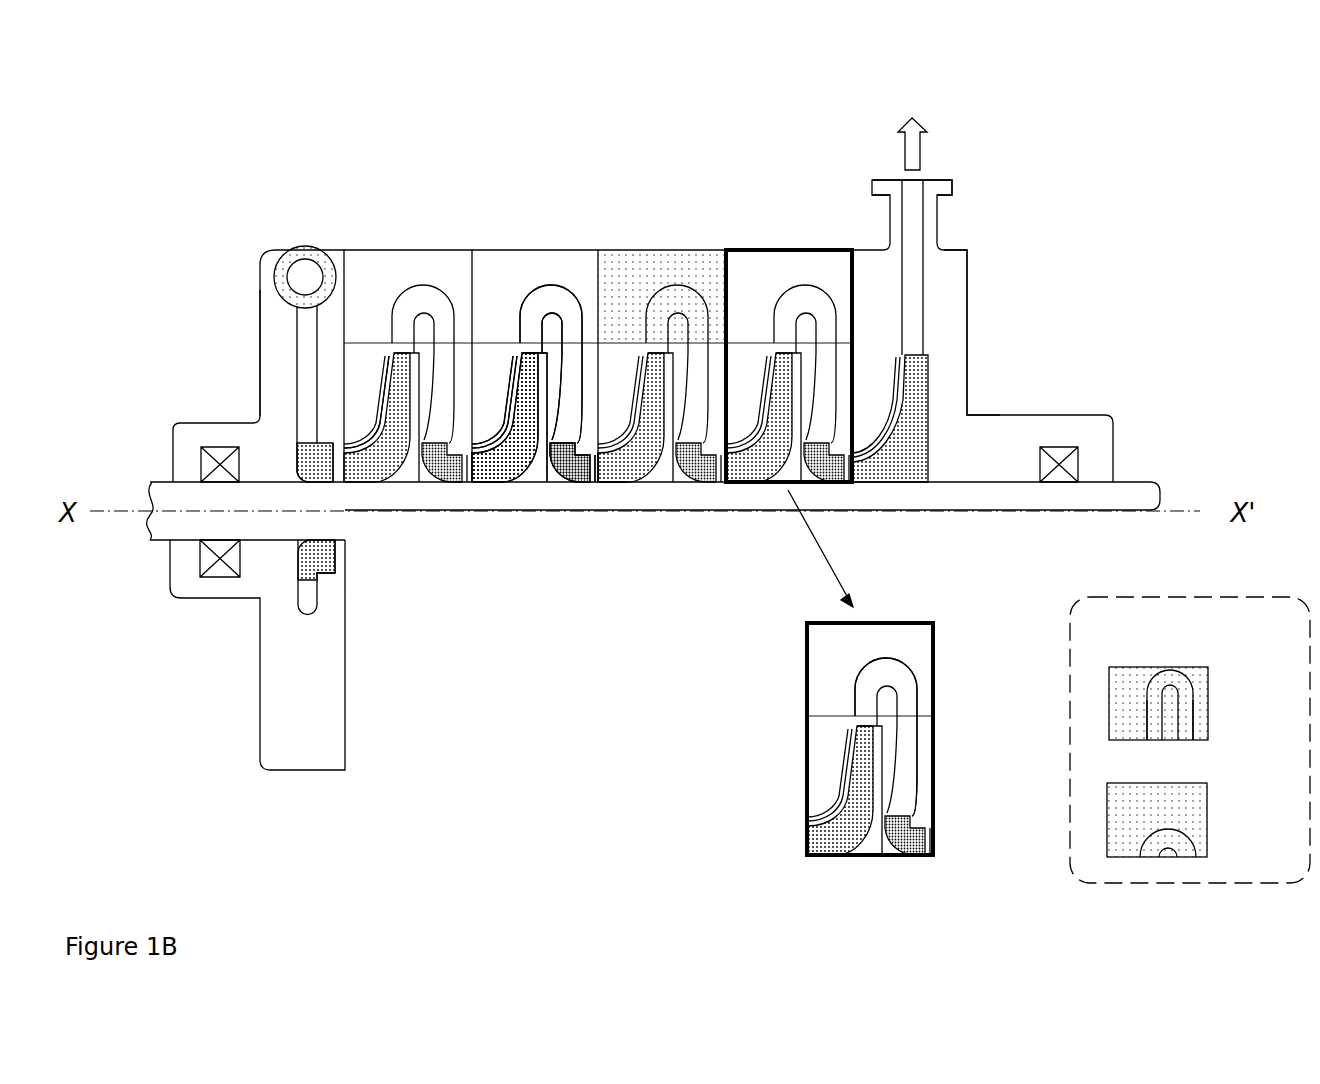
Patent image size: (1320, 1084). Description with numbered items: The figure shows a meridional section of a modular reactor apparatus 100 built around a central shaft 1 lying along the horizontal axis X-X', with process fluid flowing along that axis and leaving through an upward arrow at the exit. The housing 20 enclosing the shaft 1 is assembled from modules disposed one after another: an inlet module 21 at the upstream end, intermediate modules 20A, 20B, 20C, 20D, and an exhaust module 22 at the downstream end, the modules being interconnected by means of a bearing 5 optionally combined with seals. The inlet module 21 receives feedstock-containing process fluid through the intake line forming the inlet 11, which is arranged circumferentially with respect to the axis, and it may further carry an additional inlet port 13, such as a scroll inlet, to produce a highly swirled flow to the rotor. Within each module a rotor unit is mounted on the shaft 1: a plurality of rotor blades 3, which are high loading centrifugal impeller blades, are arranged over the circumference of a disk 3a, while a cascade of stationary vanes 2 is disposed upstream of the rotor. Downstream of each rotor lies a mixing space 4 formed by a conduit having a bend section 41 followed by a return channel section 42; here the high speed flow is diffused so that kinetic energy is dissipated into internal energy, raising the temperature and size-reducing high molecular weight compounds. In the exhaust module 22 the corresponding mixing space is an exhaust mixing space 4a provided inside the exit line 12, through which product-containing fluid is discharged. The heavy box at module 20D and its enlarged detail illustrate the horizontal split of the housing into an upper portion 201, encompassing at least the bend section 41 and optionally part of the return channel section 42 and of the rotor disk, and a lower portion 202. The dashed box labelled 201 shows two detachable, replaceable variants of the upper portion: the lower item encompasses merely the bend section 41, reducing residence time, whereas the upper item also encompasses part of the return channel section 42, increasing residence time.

The apparatus 100 is at (1265, 69).
The central shaft 1 is at (163, 525).
The stationary vanes 2 is at (580, 470).
The rotor blades 3 is at (500, 470).
The disk 3a is at (403, 465).
The mixing space 4 is at (578, 380).
The exhaust mixing space 4a is at (913, 320).
The bearing 5 is at (620, 470).
The inlet 11 is at (297, 283).
The exit 12 is at (942, 173).
The additional inlet port 13 is at (303, 603).
The housing 20 is at (258, 245).
The module 20A is at (376, 248).
The module 20B is at (495, 248).
The module 20C is at (665, 248).
The module 20D is at (785, 248).
The inlet module 21 is at (270, 352).
The exhaust module 22 is at (953, 367).
The bend section 41 is at (895, 683).
The return channel section 42 is at (910, 743).
The upper portion 201 is at (802, 683).
The lower portion 202 is at (802, 787).